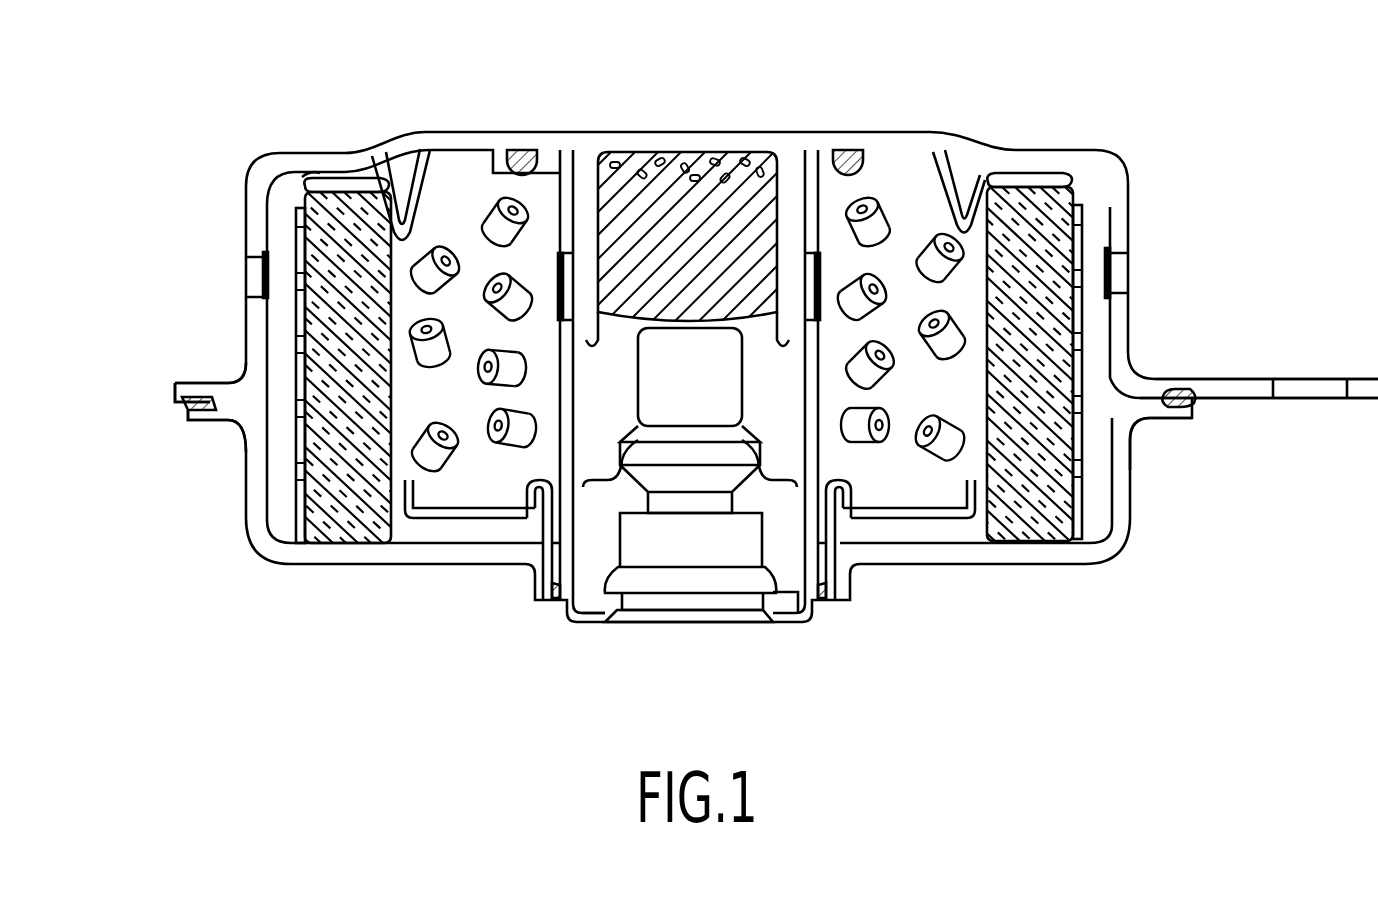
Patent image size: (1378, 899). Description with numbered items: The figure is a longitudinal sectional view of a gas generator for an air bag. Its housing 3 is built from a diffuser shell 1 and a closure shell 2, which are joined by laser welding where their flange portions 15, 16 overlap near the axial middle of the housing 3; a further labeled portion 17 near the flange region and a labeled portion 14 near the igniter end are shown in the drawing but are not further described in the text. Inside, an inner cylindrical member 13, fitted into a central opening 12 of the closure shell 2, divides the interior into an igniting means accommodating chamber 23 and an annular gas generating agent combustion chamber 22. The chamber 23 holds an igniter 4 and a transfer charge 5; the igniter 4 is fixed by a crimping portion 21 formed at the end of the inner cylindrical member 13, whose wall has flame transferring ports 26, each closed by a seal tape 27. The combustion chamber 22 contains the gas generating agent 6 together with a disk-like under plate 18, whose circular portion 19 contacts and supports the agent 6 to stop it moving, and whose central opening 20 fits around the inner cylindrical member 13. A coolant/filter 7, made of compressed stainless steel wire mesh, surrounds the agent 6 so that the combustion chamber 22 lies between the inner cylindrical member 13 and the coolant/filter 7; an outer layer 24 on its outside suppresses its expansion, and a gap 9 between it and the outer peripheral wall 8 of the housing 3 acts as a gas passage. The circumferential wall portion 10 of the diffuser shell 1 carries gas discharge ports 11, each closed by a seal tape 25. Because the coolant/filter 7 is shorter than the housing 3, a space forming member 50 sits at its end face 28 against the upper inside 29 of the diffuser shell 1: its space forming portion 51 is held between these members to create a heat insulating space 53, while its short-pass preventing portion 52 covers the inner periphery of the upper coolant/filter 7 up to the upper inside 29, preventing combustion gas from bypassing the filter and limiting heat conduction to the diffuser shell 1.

The diffuser shell 1 is at (246, 343).
The closure shell 2 is at (246, 453).
The housing 3 is at (118, 350).
The igniter 4 is at (663, 393).
The transfer charge 5 is at (700, 212).
The gas generating agent 6 is at (958, 262).
The coolant/filter 7 is at (338, 528).
The outer peripheral wall 8 is at (1122, 328).
The gap 9 is at (1093, 203).
The circumferential wall portion 10 is at (255, 225).
The gas discharge port 11 is at (266, 272).
The central opening 12 is at (855, 565).
The inner cylindrical member 13 is at (810, 440).
The inner terminal 14 is at (594, 582).
The flange portion 15 is at (1217, 386).
The flange portion 16 is at (1163, 414).
The seal wedge 17 is at (1194, 403).
The under plate 18 is at (522, 636).
The circular portion 19 is at (458, 518).
The central opening 20 is at (540, 522).
The crimping portion 21 is at (800, 622).
The gas generating agent combustion chamber 22 is at (468, 205).
The igniting means accommodating chamber 23 is at (727, 212).
The outer layer 24 is at (298, 491).
The seal tape 25 is at (285, 235).
The flame transferring port 26 is at (578, 272).
The seal tape 27 is at (823, 270).
The end face 28 is at (358, 190).
The upper inside 29 is at (402, 140).
The space forming member 50 is at (1066, 70).
The space forming portion 51 is at (1030, 177).
The short-pass preventing portion 52 is at (985, 168).
The space 53 is at (320, 170).